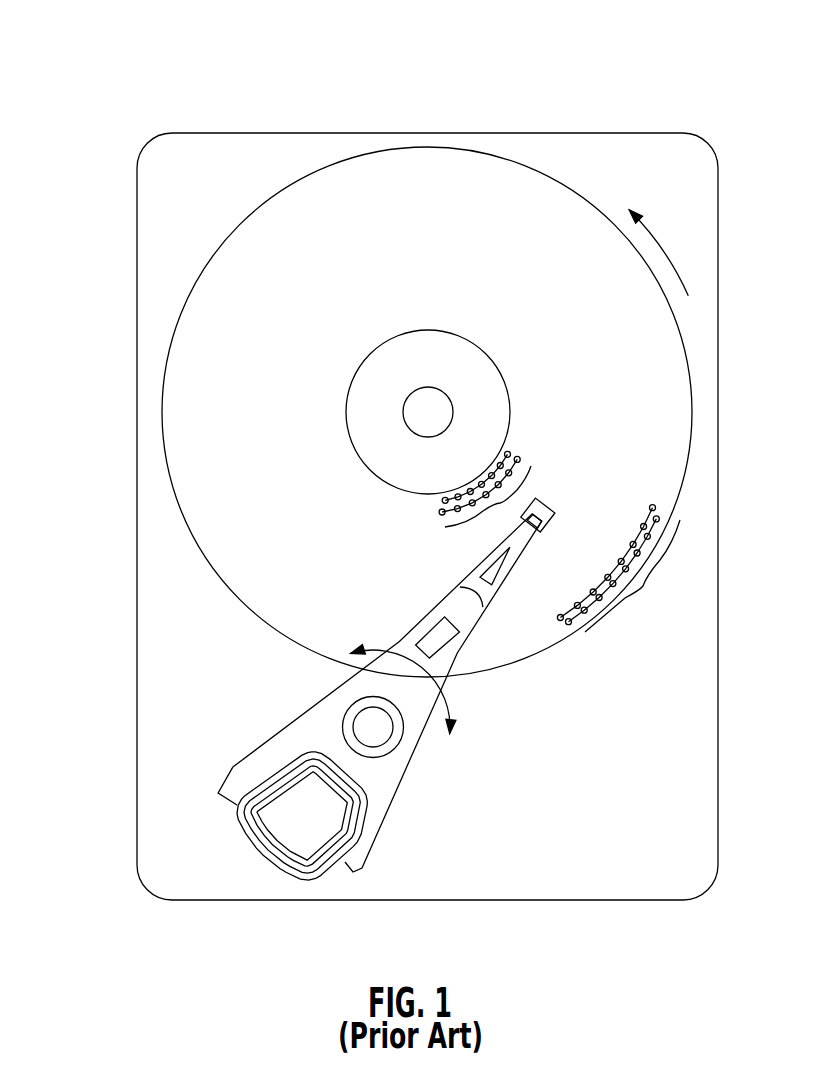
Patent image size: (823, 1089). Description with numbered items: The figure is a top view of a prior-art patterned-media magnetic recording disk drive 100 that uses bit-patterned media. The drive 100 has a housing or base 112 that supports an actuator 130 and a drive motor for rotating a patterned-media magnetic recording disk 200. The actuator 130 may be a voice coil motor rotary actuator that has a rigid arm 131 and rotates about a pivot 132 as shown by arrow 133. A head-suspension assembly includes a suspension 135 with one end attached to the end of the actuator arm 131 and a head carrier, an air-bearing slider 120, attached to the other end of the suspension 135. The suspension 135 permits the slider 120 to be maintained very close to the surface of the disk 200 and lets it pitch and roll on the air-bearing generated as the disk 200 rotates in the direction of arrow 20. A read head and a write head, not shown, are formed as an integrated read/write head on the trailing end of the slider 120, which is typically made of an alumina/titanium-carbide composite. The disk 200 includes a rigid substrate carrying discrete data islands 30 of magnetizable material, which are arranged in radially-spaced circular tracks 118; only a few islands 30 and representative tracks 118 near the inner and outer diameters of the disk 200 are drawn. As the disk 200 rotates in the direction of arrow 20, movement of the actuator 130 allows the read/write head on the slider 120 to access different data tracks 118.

The patterned-media magnetic recording disk drive 100 is at (145, 55).
The housing or base 112 is at (648, 132).
The patterned-media magnetic recording disk 200 is at (290, 184).
The arrow indicating disk rotation direction 20 is at (657, 240).
The circular tracks 118 is at (431, 496).
The data islands 30 is at (505, 502).
The actuator 130 is at (228, 778).
The rigid arm 131 is at (412, 625).
The pivot 132 is at (360, 720).
The arrow indicating actuator rotation 133 is at (455, 702).
The suspension 135 is at (470, 578).
The air-bearing slider 120 is at (548, 522).